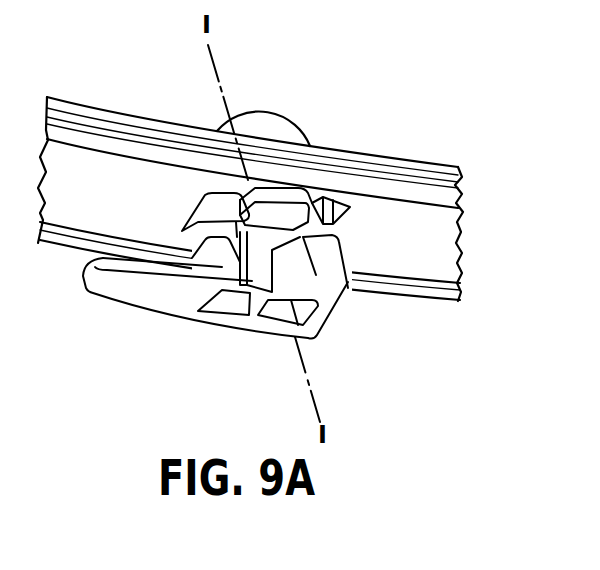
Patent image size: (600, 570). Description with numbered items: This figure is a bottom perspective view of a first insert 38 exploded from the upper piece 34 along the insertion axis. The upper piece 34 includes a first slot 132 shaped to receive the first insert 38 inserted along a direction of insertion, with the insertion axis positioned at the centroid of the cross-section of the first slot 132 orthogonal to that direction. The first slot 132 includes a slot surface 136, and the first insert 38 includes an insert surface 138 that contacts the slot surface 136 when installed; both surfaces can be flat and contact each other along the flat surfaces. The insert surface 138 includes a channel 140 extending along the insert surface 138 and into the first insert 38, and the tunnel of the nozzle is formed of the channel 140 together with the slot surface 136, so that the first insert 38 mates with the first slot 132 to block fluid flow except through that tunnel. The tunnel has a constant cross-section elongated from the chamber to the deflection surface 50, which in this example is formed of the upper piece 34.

The upper piece 34 is at (430, 243).
The first insert 38 is at (323, 318).
The deflection surface 50 is at (281, 133).
The first slot 132 is at (258, 214).
The slot surface 136 is at (205, 213).
The insert surface 138 is at (287, 270).
The channel 140 is at (243, 272).